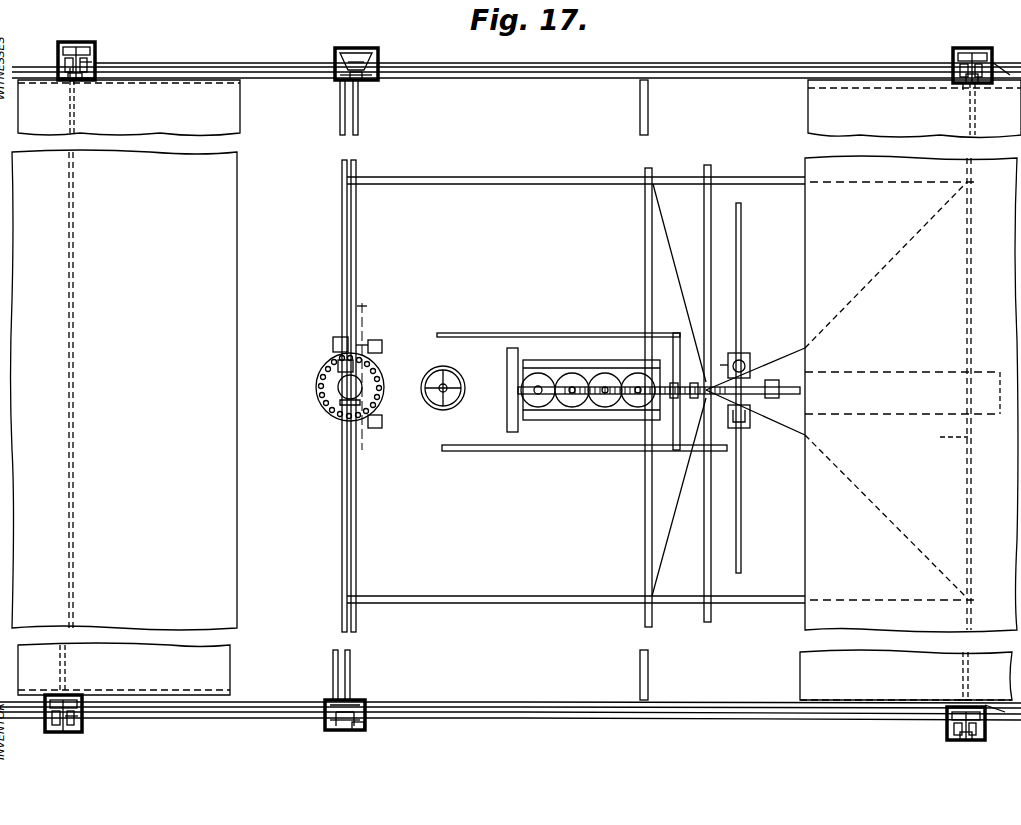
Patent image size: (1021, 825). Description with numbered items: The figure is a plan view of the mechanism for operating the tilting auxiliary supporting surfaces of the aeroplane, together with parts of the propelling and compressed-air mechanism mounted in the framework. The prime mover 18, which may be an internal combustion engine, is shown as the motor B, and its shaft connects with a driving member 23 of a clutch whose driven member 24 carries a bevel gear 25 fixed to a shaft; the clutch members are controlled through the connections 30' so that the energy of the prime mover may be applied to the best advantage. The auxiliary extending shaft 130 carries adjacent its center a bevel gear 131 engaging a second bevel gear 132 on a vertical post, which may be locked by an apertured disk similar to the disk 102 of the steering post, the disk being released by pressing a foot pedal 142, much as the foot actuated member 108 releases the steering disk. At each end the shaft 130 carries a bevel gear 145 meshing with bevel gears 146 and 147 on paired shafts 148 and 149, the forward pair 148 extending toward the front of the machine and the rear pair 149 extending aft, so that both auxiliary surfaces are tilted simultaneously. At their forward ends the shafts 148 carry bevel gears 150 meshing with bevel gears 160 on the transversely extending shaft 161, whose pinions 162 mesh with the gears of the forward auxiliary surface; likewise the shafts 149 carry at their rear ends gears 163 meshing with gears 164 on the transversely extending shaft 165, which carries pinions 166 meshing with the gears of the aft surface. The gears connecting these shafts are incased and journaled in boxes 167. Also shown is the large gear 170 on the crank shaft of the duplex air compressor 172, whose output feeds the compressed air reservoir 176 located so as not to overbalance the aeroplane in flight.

The prime mover 18 is at (580, 432).
The driving member 23 is at (668, 400).
The driven member 24 is at (706, 388).
The bevel gear 25 is at (755, 362).
The connections 30' is at (582, 370).
The motor B is at (583, 383).
The disk 102 is at (376, 396).
The foot actuated member 108 is at (380, 428).
The auxiliary extending shaft 130 is at (358, 246).
The bevel gear 131 is at (335, 395).
The second bevel gear 132 is at (362, 385).
The foot pedal 142 is at (382, 344).
The bevel gear 145 is at (378, 50).
The bevel gear 146 is at (336, 52).
The bevel gear 147 is at (378, 80).
The shafts 148 is at (275, 64).
The shafts 149 is at (605, 65).
The bevel gears 150 is at (96, 58).
The bevel gears 160 is at (92, 46).
The transversely extending shaft 161 is at (73, 382).
The pinions 162 is at (62, 44).
The gears 163 is at (952, 62).
The gears 164 is at (1010, 76).
The transversely extending shaft 165 is at (902, 404).
The pinions 166 is at (968, 86).
The boxes 167 is at (100, 62).
The large gear 170 is at (610, 405).
The air compressor 172 is at (752, 362).
The compressed air reservoir 176 is at (910, 390).